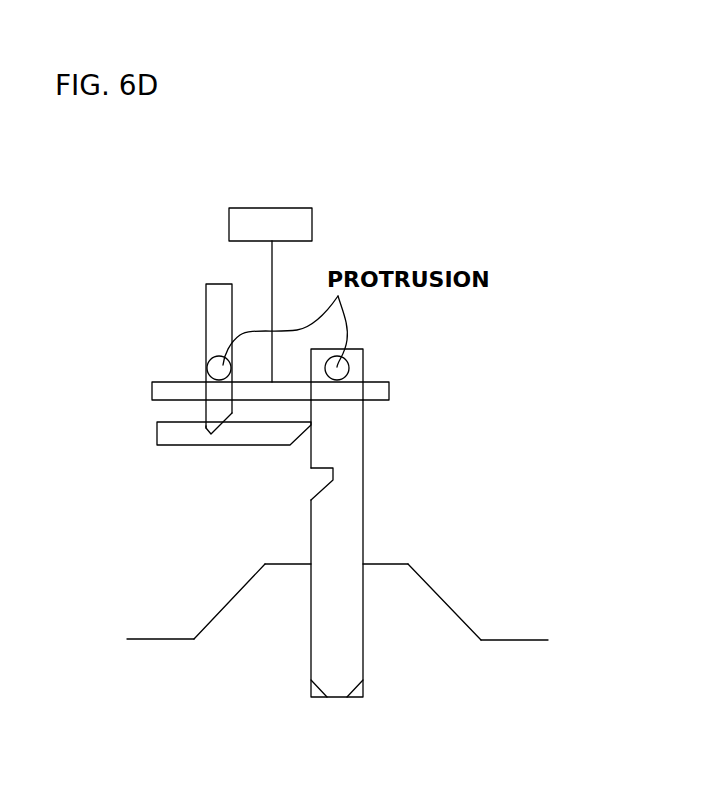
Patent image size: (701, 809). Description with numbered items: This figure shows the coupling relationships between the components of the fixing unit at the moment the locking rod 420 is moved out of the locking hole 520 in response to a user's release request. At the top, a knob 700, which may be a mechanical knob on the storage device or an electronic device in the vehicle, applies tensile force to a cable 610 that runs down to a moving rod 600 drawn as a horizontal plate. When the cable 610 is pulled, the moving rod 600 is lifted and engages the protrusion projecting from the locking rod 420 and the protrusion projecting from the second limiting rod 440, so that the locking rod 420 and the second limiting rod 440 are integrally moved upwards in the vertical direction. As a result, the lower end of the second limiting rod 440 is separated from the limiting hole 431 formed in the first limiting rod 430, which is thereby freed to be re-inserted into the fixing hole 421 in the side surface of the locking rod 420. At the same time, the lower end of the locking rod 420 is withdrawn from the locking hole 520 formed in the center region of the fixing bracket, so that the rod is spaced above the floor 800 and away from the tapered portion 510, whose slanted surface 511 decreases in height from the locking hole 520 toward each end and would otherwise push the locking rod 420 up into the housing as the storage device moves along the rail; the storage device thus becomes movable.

The knob 700 is at (262, 208).
The cable 610 is at (272, 305).
The moving rod 600 is at (169, 388).
The second limiting rod 440 is at (217, 292).
The limiting hole 431 is at (208, 430).
The first limiting rod 430 is at (165, 435).
The locking rod 420 is at (352, 527).
The fixing hole 421 is at (325, 487).
The locking hole 520 is at (312, 655).
The floor 800 is at (517, 637).
The tapered portion 510 is at (432, 570).
The slanted surface 511 is at (213, 620).